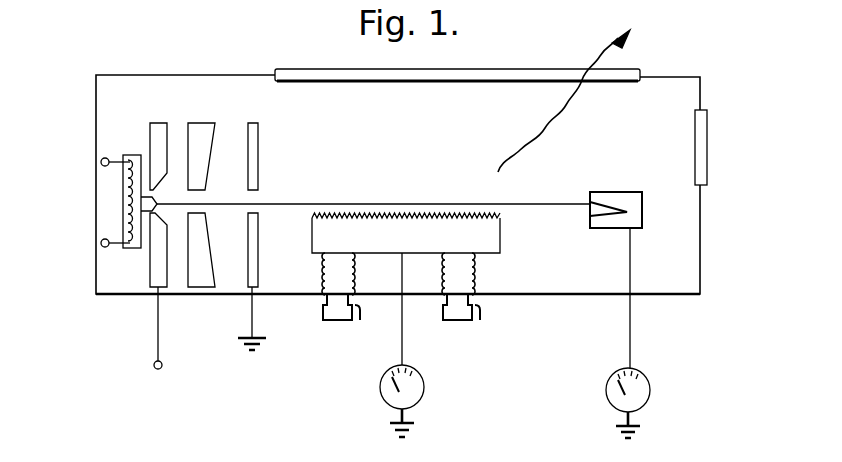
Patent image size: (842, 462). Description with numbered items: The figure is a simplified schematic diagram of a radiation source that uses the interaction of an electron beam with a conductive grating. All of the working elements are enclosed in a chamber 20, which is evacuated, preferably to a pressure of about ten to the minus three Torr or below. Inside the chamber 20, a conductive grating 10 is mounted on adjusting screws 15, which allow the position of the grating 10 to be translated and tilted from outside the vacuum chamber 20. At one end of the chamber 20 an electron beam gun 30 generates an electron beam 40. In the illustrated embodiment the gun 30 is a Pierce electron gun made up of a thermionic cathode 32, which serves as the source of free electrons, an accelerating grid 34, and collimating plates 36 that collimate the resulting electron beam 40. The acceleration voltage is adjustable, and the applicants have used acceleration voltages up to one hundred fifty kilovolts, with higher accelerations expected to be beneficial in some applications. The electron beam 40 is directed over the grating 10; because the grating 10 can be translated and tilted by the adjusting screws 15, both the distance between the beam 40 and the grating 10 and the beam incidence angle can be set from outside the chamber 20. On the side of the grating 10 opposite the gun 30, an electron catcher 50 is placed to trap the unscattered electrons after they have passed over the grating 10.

The conductive grating 10 is at (500, 253).
The adjusting screws 15 is at (411, 302).
The chamber 20 is at (690, 286).
The electron beam gun 30 is at (185, 223).
The thermionic cathode 32 is at (123, 155).
The accelerating grid 34 is at (148, 292).
The collimating plates 36 is at (249, 290).
The electron beam 40 is at (318, 190).
The electron catcher 50 is at (643, 227).